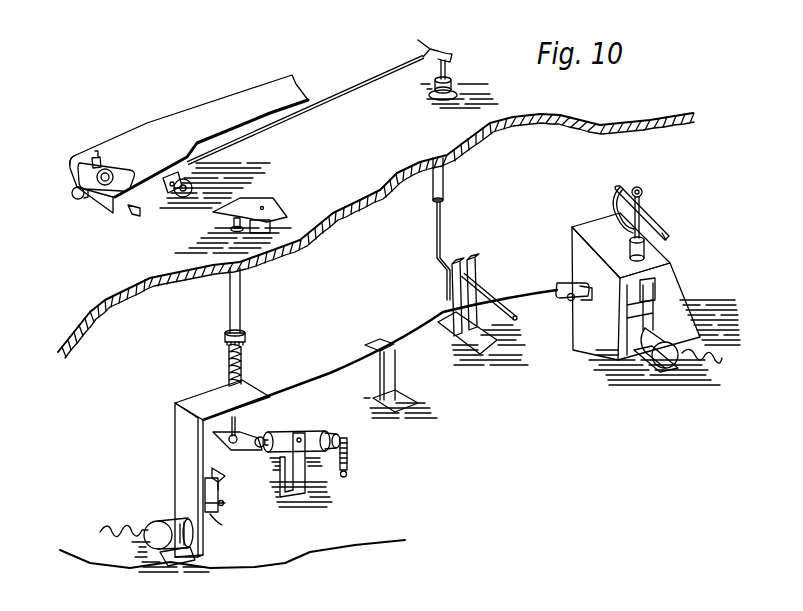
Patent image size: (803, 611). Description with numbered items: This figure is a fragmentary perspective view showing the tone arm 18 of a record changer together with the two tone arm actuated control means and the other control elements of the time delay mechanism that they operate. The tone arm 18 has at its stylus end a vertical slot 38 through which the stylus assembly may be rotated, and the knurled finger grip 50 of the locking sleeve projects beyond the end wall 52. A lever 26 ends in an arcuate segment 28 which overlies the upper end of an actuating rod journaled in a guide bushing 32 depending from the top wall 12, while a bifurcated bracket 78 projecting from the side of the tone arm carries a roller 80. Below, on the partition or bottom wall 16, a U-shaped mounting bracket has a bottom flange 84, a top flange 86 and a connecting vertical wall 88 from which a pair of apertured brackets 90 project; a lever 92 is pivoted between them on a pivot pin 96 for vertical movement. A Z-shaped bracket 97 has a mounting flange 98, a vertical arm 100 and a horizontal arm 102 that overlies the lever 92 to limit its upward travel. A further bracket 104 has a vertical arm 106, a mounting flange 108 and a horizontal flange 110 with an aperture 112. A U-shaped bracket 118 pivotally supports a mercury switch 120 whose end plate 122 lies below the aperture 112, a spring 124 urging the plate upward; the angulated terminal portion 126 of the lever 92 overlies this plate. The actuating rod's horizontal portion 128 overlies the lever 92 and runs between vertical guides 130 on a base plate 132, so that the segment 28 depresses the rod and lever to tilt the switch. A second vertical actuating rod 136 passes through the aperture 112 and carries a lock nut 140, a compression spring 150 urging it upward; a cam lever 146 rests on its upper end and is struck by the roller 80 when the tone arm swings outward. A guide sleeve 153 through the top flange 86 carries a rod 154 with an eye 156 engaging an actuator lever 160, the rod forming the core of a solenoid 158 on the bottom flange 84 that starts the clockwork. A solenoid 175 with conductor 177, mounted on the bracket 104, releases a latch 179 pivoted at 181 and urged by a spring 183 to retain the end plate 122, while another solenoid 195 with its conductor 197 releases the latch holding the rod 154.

The top wall 12 is at (525, 107).
The partition or bottom wall 16 is at (273, 547).
The tone arm 18 is at (218, 106).
The lever 26 is at (331, 96).
The arcuate segment 28 is at (427, 46).
The guide bushing 32 is at (455, 81).
The slot or aperture 38 is at (127, 171).
The knurled finger grip portion 50 is at (74, 196).
The end wall 52 is at (105, 201).
The bifurcated bracket 78 is at (176, 194).
The roller 80 is at (193, 190).
The bottom flange 84 is at (688, 331).
The top flange 86 is at (591, 228).
The vertical wall 88 is at (607, 323).
The apertured brackets 90 is at (566, 283).
The lever 92 is at (333, 370).
The pivot pin 96 is at (567, 302).
The Z-shaped bracket 97 is at (402, 373).
The mounting flange 98 is at (396, 401).
The vertical arm 100 is at (388, 363).
The horizontally extending arm 102 is at (377, 340).
The bracket 104 is at (194, 473).
The vertical arm 106 is at (180, 489).
The mounting flange 108 is at (193, 556).
The horizontal flange 110 is at (196, 400).
The aperture 112 is at (246, 394).
The U-shaped bracket 118 is at (306, 474).
The mercury switch element 120 is at (286, 436).
The end plate 122 is at (250, 448).
The spring 124 is at (349, 462).
The angulated terminal portion 126 is at (242, 431).
The horizontal laterally extending portion 128 is at (494, 300).
The vertical guides 130 is at (453, 279).
The base plate 132 is at (481, 348).
The vertical actuating rod 136 is at (232, 228).
The lock nut 140 is at (244, 333).
The cam lever 146 is at (250, 206).
The compression spring 150 is at (246, 362).
The guide sleeve or bushing 153 is at (648, 252).
The rod 154 is at (618, 214).
The eye 156 is at (642, 190).
The solenoid 158 is at (654, 284).
The actuator lever 160 is at (663, 226).
The solenoid 175 is at (170, 526).
The conductor 177 is at (110, 527).
The latch 179 is at (222, 525).
The pivot 181 is at (224, 503).
The spring 183 is at (207, 478).
The solenoid 195 is at (645, 349).
The electric conductor 197 is at (708, 360).